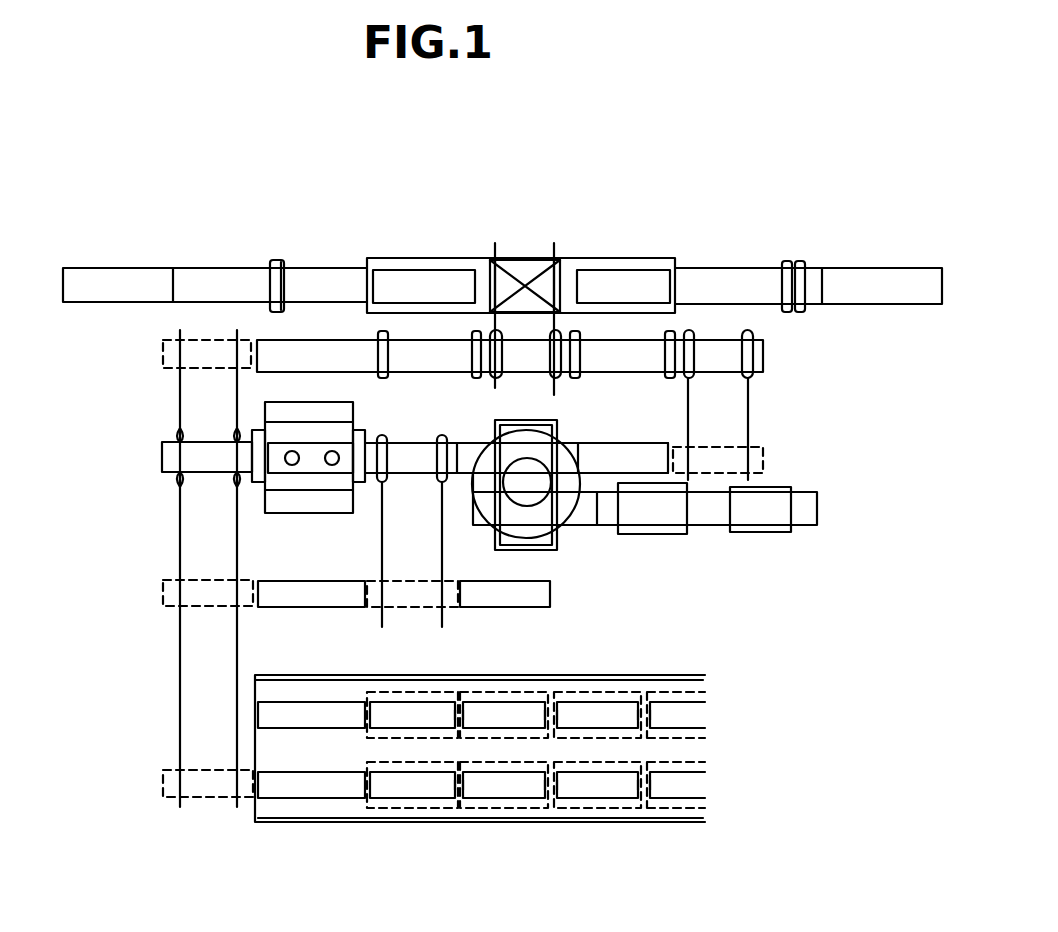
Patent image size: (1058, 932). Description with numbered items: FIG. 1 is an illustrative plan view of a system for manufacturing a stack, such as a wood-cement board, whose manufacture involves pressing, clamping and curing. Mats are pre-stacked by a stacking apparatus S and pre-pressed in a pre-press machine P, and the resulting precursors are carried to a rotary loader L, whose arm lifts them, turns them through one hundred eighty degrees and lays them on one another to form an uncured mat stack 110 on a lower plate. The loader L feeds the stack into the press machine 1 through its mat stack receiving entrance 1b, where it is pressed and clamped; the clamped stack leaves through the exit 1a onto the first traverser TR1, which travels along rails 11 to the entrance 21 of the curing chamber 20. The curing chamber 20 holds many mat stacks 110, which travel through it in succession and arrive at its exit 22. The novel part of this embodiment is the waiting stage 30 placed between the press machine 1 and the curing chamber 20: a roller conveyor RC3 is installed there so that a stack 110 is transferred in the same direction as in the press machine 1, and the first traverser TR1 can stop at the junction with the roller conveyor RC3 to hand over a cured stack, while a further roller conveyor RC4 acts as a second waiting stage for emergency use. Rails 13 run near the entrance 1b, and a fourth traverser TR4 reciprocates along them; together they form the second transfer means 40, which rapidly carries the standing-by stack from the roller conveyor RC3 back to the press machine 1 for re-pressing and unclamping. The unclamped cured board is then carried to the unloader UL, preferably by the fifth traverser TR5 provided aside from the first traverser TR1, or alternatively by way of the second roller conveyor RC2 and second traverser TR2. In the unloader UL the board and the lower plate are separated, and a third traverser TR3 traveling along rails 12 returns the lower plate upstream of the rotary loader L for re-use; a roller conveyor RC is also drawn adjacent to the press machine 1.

The press machine 1 is at (296, 504).
The exit 1a is at (250, 456).
The mat stack receiving entrance 1b is at (360, 437).
The rails 11 is at (180, 712).
The rails 12 is at (748, 423).
The rails 13 is at (382, 545).
The curing chamber 20 is at (612, 826).
The entrance 21 is at (256, 788).
The exit 22 is at (256, 715).
The waiting stage 30 is at (520, 626).
The second transfer means 40 is at (422, 572).
The mat stack 110 is at (622, 695).
The unloader UL is at (537, 240).
The rotary loader L is at (545, 543).
The pre-press machine P is at (680, 533).
The stacking apparatus S is at (773, 534).
The robot carrier RC is at (632, 455).
The second roller conveyor RC2 is at (314, 350).
The roller conveyor RC3 is at (310, 600).
The roller conveyor RC4 is at (545, 598).
The first traverser TR1 is at (165, 458).
The second traverser TR2 is at (520, 346).
The third traverser TR3 is at (714, 358).
The fourth traverser TR4 is at (418, 455).
The fifth traverser TR5 is at (163, 353).